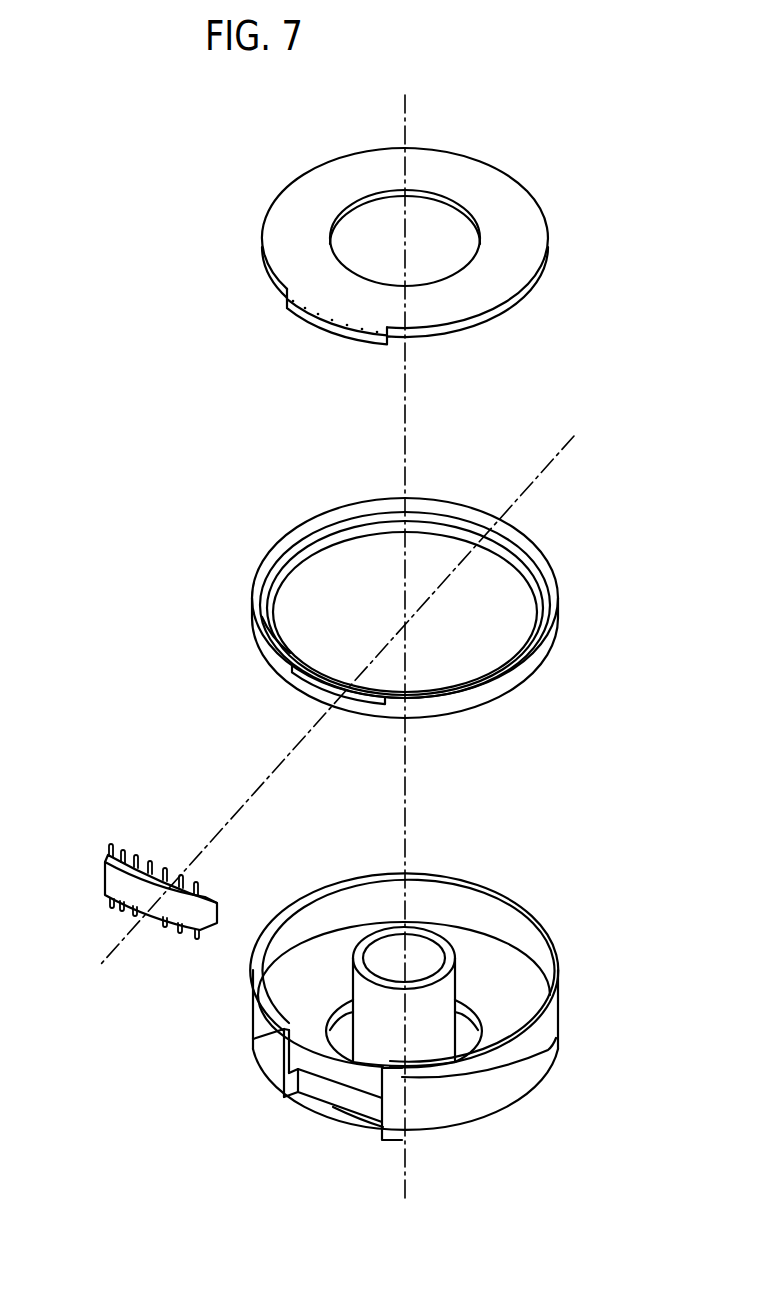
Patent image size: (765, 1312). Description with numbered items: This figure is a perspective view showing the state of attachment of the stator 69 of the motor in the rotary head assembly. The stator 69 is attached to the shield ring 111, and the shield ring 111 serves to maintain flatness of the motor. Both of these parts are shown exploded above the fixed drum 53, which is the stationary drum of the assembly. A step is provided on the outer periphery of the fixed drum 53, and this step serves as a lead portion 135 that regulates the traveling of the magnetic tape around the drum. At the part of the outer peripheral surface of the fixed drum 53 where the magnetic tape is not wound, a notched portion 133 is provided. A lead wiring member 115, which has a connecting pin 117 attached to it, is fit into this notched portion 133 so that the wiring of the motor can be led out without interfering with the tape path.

The stator 69 is at (282, 228).
The shield ring 111 is at (262, 568).
The lead wiring member 115 is at (112, 885).
The connecting pin 117 is at (112, 847).
The fixed drum 53 is at (503, 1105).
The notched portion 133 is at (312, 1110).
The lead portion 135 is at (548, 1052).